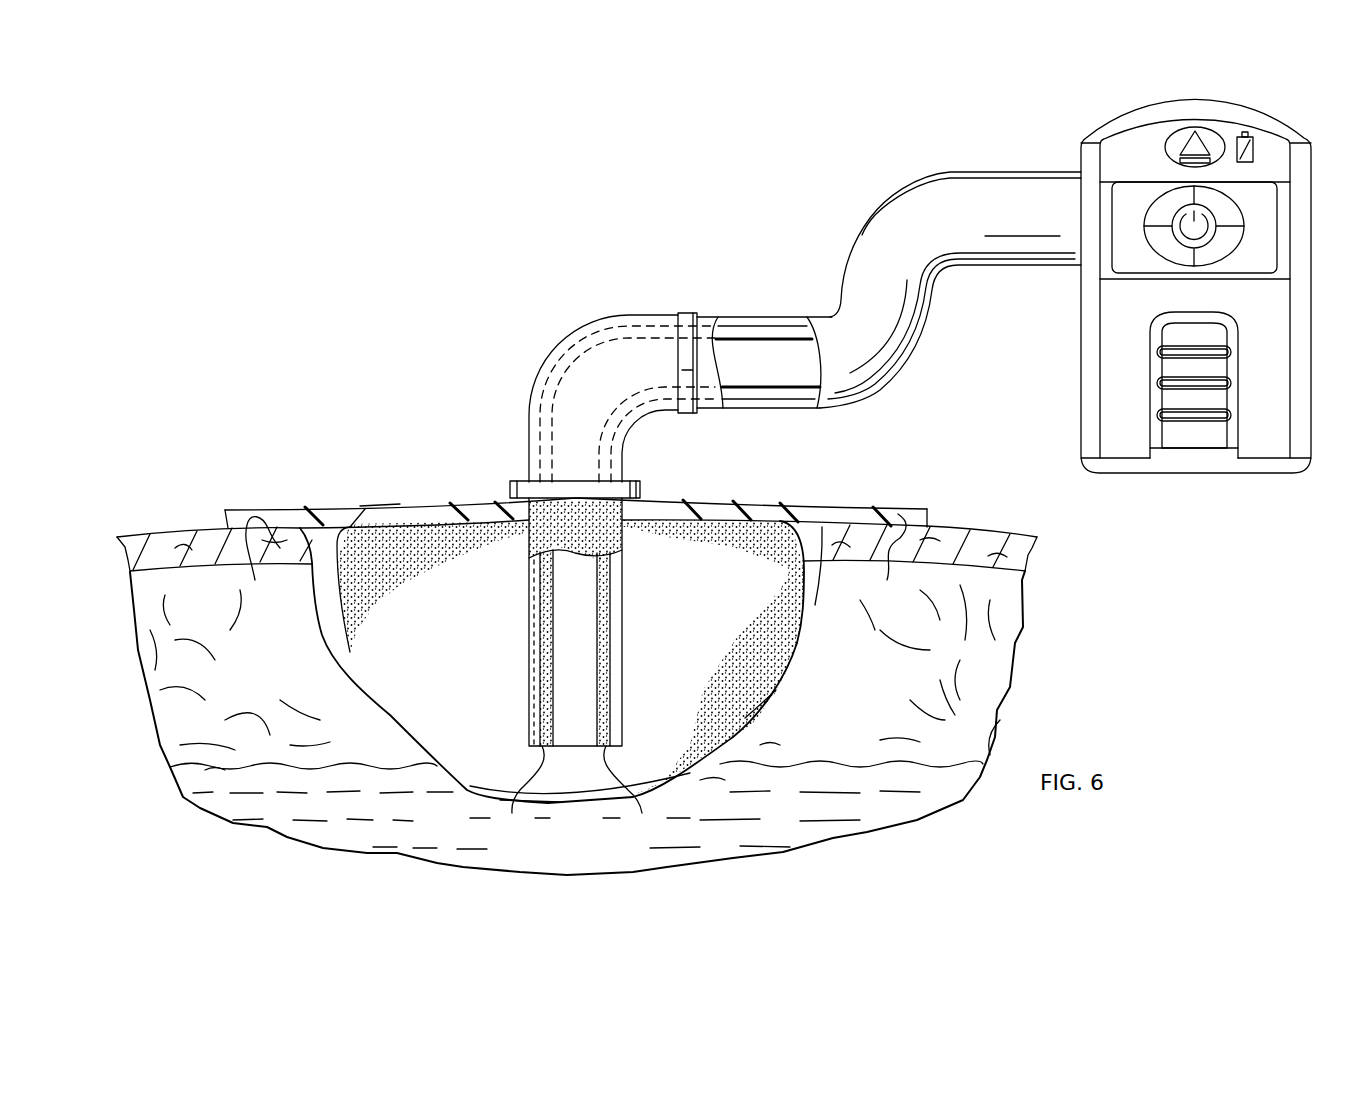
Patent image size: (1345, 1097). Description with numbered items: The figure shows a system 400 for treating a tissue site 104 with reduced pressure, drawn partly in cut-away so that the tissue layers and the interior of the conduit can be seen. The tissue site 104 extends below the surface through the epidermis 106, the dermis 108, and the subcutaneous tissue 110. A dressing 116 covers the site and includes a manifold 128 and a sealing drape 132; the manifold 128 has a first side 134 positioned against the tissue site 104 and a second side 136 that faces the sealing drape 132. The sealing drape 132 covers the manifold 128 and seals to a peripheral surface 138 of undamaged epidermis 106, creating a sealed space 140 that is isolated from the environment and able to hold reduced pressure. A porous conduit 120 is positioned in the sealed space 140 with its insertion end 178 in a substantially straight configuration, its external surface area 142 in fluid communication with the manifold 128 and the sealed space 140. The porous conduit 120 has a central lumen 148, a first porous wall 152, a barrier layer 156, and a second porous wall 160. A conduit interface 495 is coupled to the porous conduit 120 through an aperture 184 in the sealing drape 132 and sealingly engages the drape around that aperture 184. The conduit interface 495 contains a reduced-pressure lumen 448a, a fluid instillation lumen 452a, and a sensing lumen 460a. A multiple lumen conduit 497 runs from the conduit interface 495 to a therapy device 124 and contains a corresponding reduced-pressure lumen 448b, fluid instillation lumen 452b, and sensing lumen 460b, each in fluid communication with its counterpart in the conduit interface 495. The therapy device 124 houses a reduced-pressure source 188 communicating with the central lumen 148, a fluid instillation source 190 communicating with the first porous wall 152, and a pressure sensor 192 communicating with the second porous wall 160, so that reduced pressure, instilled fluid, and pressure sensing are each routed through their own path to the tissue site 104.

The tissue site 104 is at (777, 717).
The epidermis 106 is at (993, 530).
The dermis 108 is at (232, 720).
The subcutaneous tissue 110 is at (558, 845).
The dressing 116 is at (838, 456).
The porous conduit 120 is at (558, 670).
The therapy device 124 is at (1159, 253).
The manifold 128 is at (787, 633).
The sealing drape 132 is at (907, 500).
The first side 134 is at (467, 790).
The second side 136 is at (378, 501).
The peripheral surface 138 is at (570, 562).
The sealed space 140 is at (319, 551).
The external surface area 142 is at (521, 546).
The central lumen 148 is at (593, 633).
The first porous wall 152 is at (575, 794).
The barrier layer 156 is at (537, 688).
The second porous wall 160 is at (538, 750).
The insertion end 178 is at (522, 654).
The aperture 184 is at (625, 535).
The reduced-pressure source 188 is at (1132, 182).
The fluid instillation source 190 is at (1150, 393).
The pressure sensor 192 is at (1267, 182).
The system 400 is at (752, 320).
The reduced-pressure lumen 448a is at (584, 390).
The reduced-pressure lumen 448b is at (766, 379).
The fluid instillation lumen 452a is at (550, 427).
The fluid instillation lumen 452b is at (778, 333).
The sensing lumen 460a is at (533, 462).
The sensing lumen 460b is at (738, 323).
The conduit interface 495 is at (553, 377).
The multiple lumen conduit 497 is at (900, 190).